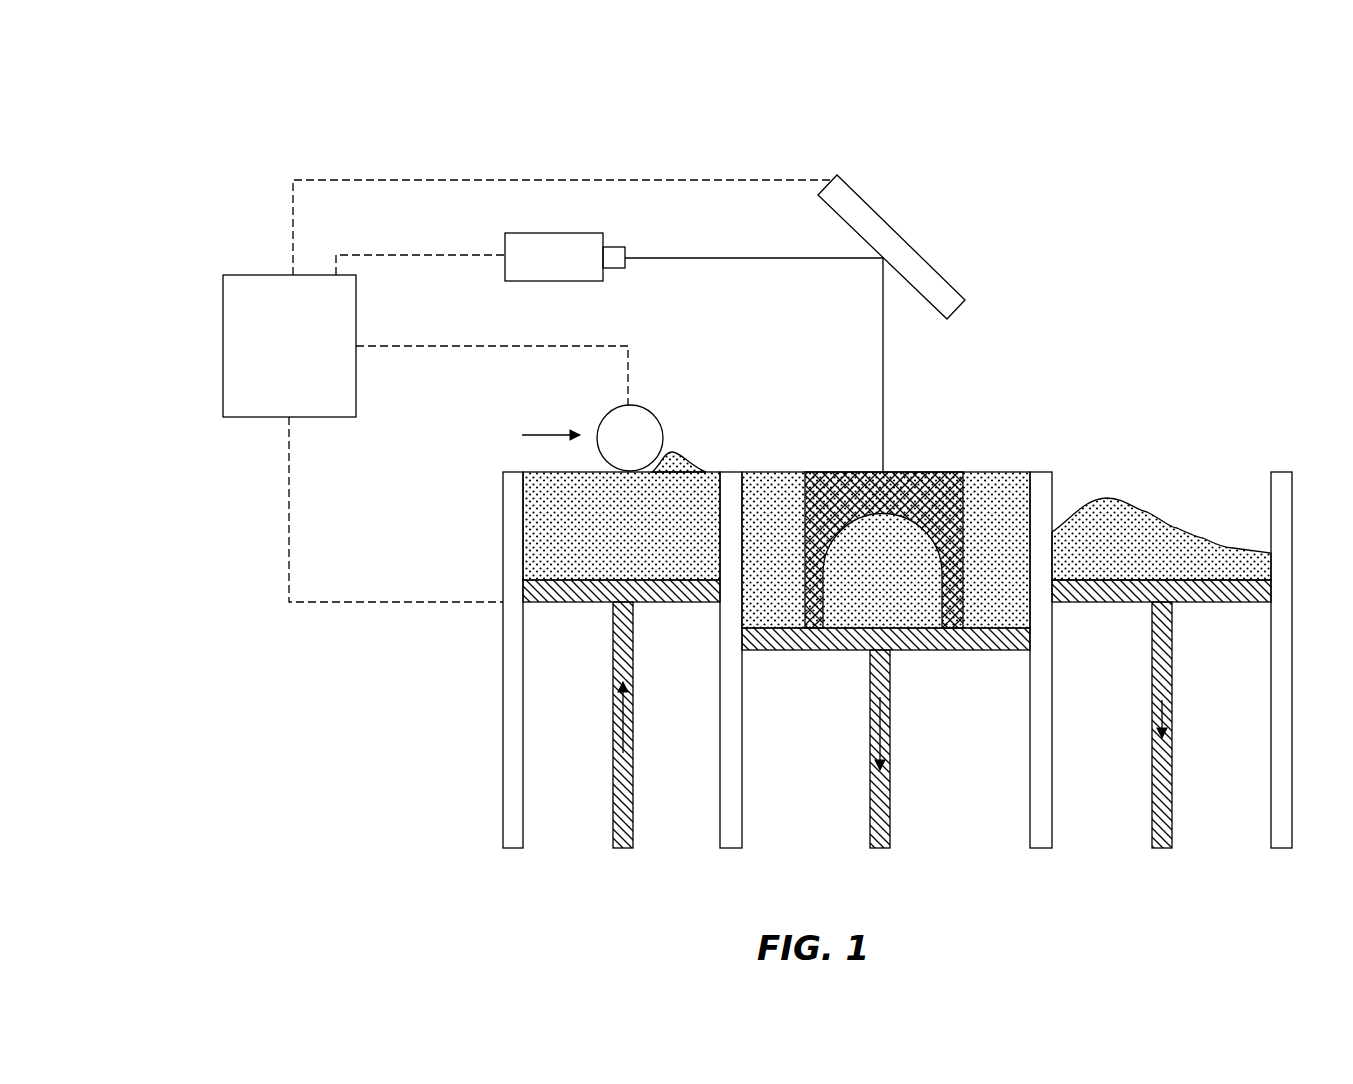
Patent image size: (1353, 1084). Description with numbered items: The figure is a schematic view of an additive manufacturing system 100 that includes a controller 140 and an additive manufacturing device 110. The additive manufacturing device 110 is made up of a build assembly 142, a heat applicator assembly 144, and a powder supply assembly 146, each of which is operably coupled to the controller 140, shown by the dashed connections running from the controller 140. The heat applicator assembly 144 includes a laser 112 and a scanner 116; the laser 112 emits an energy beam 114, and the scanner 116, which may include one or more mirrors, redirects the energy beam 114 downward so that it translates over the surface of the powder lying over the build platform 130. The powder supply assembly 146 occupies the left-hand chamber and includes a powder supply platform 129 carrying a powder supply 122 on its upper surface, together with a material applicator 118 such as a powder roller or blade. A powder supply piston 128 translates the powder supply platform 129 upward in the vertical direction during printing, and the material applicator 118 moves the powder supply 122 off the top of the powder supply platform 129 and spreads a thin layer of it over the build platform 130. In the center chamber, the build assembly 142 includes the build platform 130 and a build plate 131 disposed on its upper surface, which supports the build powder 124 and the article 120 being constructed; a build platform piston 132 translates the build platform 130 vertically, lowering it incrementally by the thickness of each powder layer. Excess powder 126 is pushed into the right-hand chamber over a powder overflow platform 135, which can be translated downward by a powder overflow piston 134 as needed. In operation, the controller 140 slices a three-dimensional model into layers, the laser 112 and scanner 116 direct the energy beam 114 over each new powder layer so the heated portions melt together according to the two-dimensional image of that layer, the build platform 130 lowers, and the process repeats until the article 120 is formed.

The additive manufacturing system 100 is at (225, 107).
The additive manufacturing device 110 is at (1030, 293).
The laser 112 is at (565, 257).
The energy beam 114 is at (883, 377).
The scanner 116 is at (905, 260).
The material applicator 118 is at (638, 432).
The article 120 is at (917, 473).
The powder supply 122 is at (683, 500).
The build powder 124 is at (998, 497).
The excess powder 126 is at (1150, 533).
The powder supply piston 128 is at (633, 800).
The powder supply platform 129 is at (660, 592).
The build platform 130 is at (950, 653).
The build plate 131 is at (989, 620).
The build platform piston 132 is at (890, 815).
The powder overflow piston 134 is at (1172, 790).
The powder overflow platform 135 is at (1217, 590).
The controller 140 is at (289, 346).
The build assembly 142 is at (976, 398).
The heat applicator assembly 144 is at (670, 172).
The powder supply assembly 146 is at (582, 360).